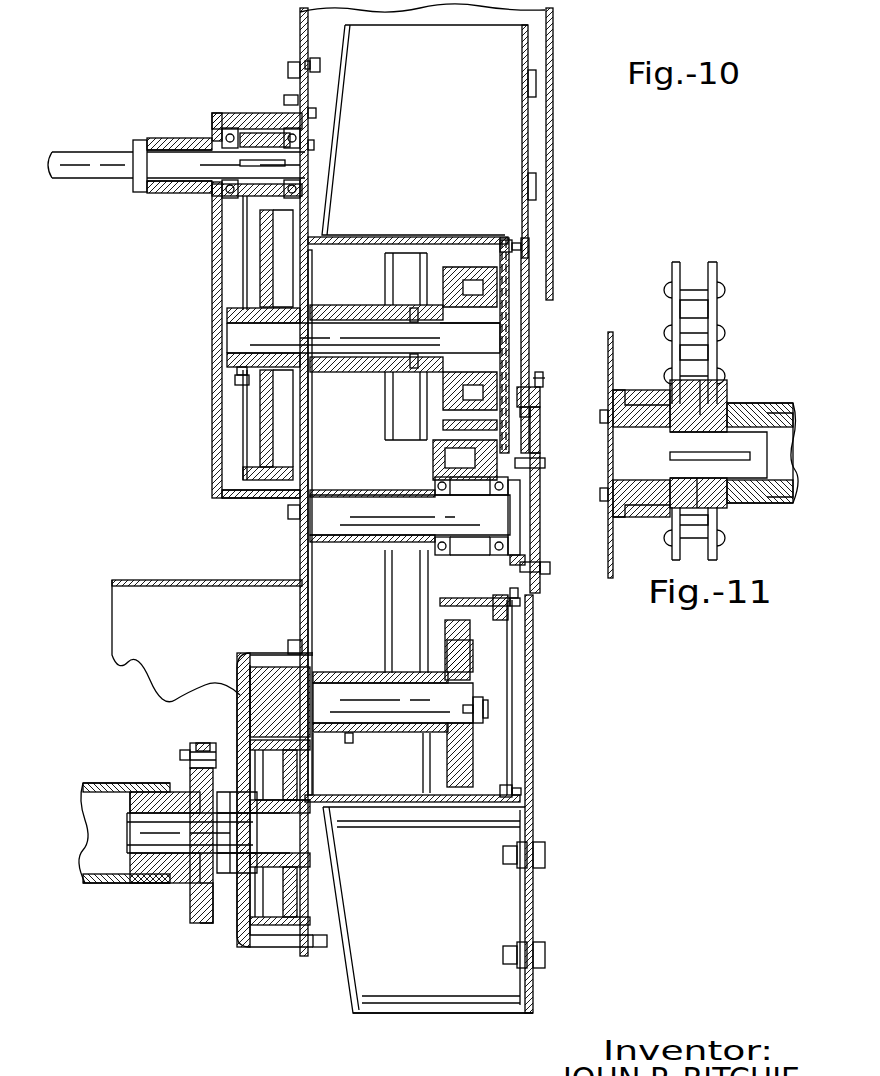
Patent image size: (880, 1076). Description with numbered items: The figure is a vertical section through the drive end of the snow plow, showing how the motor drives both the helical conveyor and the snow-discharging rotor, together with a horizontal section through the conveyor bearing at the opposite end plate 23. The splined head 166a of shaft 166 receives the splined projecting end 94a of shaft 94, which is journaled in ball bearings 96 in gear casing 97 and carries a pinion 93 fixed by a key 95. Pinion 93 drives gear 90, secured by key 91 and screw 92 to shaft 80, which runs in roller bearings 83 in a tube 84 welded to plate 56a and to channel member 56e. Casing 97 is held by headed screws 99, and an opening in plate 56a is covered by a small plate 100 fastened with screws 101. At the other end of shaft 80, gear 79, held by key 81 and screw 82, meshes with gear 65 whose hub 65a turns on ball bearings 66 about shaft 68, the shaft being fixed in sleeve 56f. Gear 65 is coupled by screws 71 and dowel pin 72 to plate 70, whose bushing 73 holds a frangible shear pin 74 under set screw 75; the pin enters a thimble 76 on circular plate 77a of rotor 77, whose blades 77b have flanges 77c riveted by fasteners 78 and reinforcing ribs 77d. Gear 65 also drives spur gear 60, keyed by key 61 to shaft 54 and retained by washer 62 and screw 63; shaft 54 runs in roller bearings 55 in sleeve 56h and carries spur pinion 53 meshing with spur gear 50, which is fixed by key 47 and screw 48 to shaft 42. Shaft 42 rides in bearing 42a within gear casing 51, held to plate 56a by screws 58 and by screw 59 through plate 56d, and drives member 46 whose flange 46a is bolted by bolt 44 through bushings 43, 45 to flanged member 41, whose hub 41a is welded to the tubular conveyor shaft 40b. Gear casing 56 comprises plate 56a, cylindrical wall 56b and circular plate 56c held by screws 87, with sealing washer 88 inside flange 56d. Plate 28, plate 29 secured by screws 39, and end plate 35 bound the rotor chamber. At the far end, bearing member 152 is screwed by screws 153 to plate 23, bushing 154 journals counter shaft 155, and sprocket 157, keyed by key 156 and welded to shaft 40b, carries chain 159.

In FIG. 11, the end plate 23 is at (614, 350).
In FIG. 10, the plate 28 is at (157, 580).
In FIG. 10, the plate 29 is at (300, 22).
In FIG. 10, the end plate 35 is at (553, 52).
In FIG. 10, the headed and nutted screws 39 is at (320, 63).
In FIG. 10, the central shaft 40b is at (110, 785).
In FIG. 11, the central shaft 40b is at (795, 522).
In FIG. 10, the flanged driving member 41 is at (187, 898).
In FIG. 10, the hub 41a is at (172, 880).
In FIG. 10, the shaft 42 is at (125, 840).
In FIG. 10, the bearing 42a is at (235, 830).
In FIG. 10, the bushing or thimble 43 is at (193, 740).
In FIG. 10, the headed and nutted bolt 44 is at (180, 755).
In FIG. 10, the flanged bushing or thimble 45 is at (208, 742).
In FIG. 10, the driving member 46 is at (220, 865).
In FIG. 10, the flange 46a is at (208, 922).
In FIG. 10, the key 47 is at (312, 850).
In FIG. 10, the screw 48 is at (305, 886).
In FIG. 10, the spur gear 50 is at (305, 926).
In FIG. 10, the gear casing 51 is at (237, 680).
In FIG. 10, the spur pinion 53 is at (262, 680).
In FIG. 10, the shaft 54 is at (356, 690).
In FIG. 10, the bearings 55 is at (326, 672).
In FIG. 10, the gear casing 56 is at (368, 240).
In FIG. 10, the plate 56a is at (315, 85).
In FIG. 10, the cylindrical wall 56b is at (356, 795).
In FIG. 10, the circular plate 56c is at (513, 719).
In FIG. 10, the cylindrical flange 56d is at (520, 620).
In FIG. 10, the channel member 56e is at (420, 426).
In FIG. 10, the hub or sleeve 56f is at (360, 488).
In FIG. 10, the tubular portion or sleeve 56h is at (372, 738).
In FIG. 10, the headed screws 58 is at (290, 642).
In FIG. 10, the headed screw 59 is at (320, 948).
In FIG. 10, the spur gear 60 is at (464, 660).
In FIG. 10, the key 61 is at (466, 722).
In FIG. 10, the washer 62 is at (480, 700).
In FIG. 10, the headed screw 63 is at (482, 708).
In FIG. 10, the gear 65 is at (496, 622).
In FIG. 10, the hub 65a is at (440, 570).
In FIG. 10, the bearings 66 is at (500, 497).
In FIG. 10, the shaft 68 is at (333, 505).
In FIG. 10, the plate 70 is at (541, 530).
In FIG. 10, the headed screws 71 is at (550, 568).
In FIG. 10, the dowel pin 72 is at (545, 462).
In FIG. 10, the bushing 73 is at (545, 397).
In FIG. 10, the frangible shear pin 74 is at (542, 405).
In FIG. 10, the set screw 75 is at (540, 375).
In FIG. 10, the small bushing or thimble 76 is at (540, 420).
In FIG. 10, the rotor or impeller 77 is at (440, 1015).
In FIG. 10, the circular plate 77a is at (529, 318).
In FIG. 10, the blades 77b is at (505, 133).
In FIG. 10, the flanges 77c is at (520, 898).
In FIG. 10, the reinforcing ribs 77d is at (440, 1000).
In FIG. 10, the headed bolts or rivets 78 is at (545, 952).
In FIG. 10, the gear 79 is at (465, 265).
In FIG. 10, the shaft 80 is at (338, 320).
In FIG. 10, the key 81 is at (450, 336).
In FIG. 10, the screw 82 is at (470, 388).
In FIG. 10, the bearings 83 is at (416, 308).
In FIG. 10, the sleeve or tube 84 is at (368, 373).
In FIG. 10, the headed screws 87 is at (515, 247).
In FIG. 10, the sealing washer 88 is at (519, 608).
In FIG. 10, the gear 90 is at (262, 255).
In FIG. 10, the key 91 is at (236, 342).
In FIG. 10, the screw 92 is at (237, 386).
In FIG. 10, the pinion 93 is at (265, 128).
In FIG. 10, the shaft 94 is at (198, 191).
In FIG. 10, the projecting end 94a is at (175, 160).
In FIG. 10, the key 95 is at (312, 160).
In FIG. 10, the bearings 96 is at (218, 128).
In FIG. 10, the gear casing 97 is at (220, 118).
In FIG. 10, the headed screws 99 is at (290, 75).
In FIG. 10, the small plate 100 is at (312, 147).
In FIG. 10, the headed screws 101 is at (316, 112).
In FIG. 11, the bearing member 152 is at (645, 405).
In FIG. 11, the headed screws 153 is at (606, 494).
In FIG. 11, the bushing 154 is at (646, 512).
In FIG. 11, the stub or counter shaft 155 is at (740, 492).
In FIG. 11, the key 156 is at (738, 455).
In FIG. 11, the sprocket 157 is at (708, 400).
In FIG. 11, the chain 159 is at (720, 305).
In FIG. 10, the shaft 166 is at (100, 172).
In FIG. 10, the splined head 166a is at (150, 195).